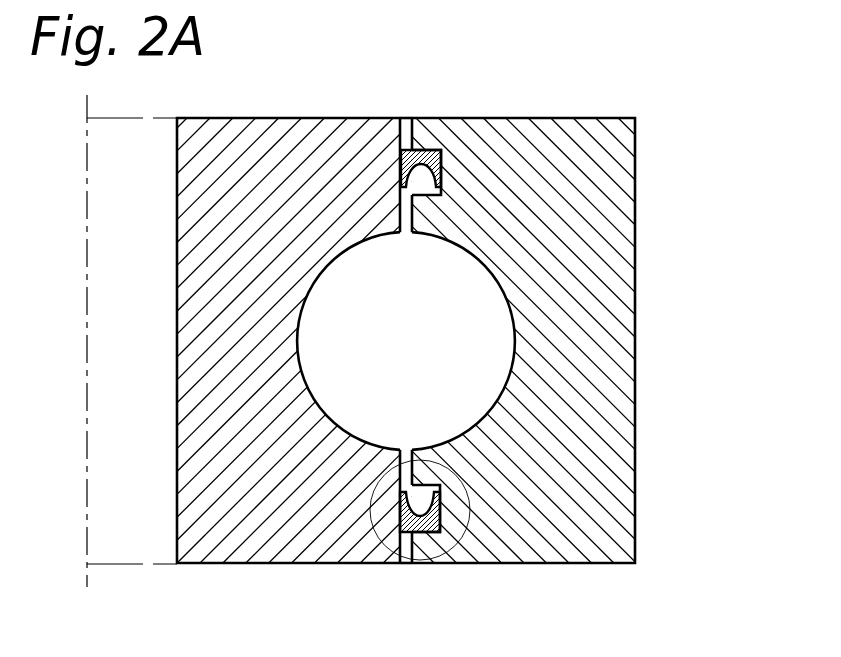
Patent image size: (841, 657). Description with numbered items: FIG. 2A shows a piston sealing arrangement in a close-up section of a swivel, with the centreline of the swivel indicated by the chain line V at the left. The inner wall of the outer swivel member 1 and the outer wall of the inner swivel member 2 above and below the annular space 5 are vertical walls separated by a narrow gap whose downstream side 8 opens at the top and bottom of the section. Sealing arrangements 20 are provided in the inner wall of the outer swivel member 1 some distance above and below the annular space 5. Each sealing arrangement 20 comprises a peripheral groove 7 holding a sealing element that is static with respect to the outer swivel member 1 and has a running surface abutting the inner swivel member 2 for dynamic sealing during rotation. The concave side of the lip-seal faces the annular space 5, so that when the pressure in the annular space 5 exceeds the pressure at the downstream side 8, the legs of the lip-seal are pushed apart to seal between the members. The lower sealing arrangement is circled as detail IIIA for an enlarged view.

The outer swivel member 1 is at (568, 132).
The inner swivel member 2 is at (285, 137).
The annular space 5 is at (467, 338).
The peripheral groove 7 is at (423, 185).
The downstream side 8 is at (406, 128).
The sealing arrangement 20 is at (430, 149).
The section line V is at (87, 344).
The detail IIIA is at (448, 550).